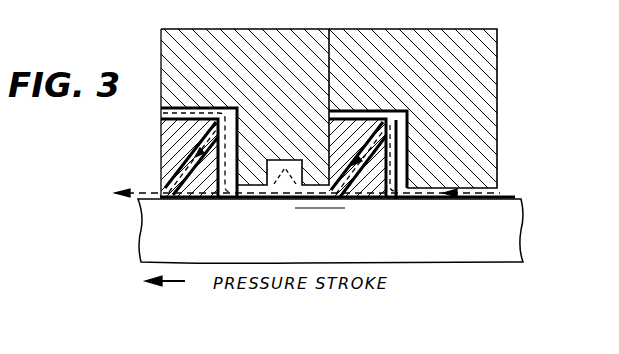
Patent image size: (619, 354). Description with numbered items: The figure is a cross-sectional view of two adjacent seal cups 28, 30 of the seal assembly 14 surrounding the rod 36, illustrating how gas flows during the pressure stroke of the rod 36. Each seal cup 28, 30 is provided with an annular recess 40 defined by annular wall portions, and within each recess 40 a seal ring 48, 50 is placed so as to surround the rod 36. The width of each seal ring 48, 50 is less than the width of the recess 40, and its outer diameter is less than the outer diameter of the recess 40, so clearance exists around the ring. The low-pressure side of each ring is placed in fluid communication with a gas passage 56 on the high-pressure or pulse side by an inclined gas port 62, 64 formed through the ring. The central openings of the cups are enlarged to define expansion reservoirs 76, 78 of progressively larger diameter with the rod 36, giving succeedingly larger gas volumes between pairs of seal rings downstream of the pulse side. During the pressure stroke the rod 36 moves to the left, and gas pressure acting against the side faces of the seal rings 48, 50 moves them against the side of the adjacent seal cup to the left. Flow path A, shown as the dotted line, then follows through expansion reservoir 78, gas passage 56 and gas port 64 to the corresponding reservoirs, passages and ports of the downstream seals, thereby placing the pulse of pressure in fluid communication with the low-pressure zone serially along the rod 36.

The printing apparatus 14 is at (78, 1).
The seal cup 28 is at (255, 38).
The seal cup 30 is at (408, 44).
The annular recess 40 is at (199, 114).
The seal ring 48 is at (170, 141).
The seal ring 50 is at (330, 128).
The gas passage 56 is at (234, 125).
The gas port 62 is at (207, 195).
The gas port 64 is at (345, 201).
The expansion reservoir 76 is at (283, 181).
The expansion reservoir 78 is at (437, 199).
The rod 36 is at (500, 257).
The flow path A is at (500, 193).